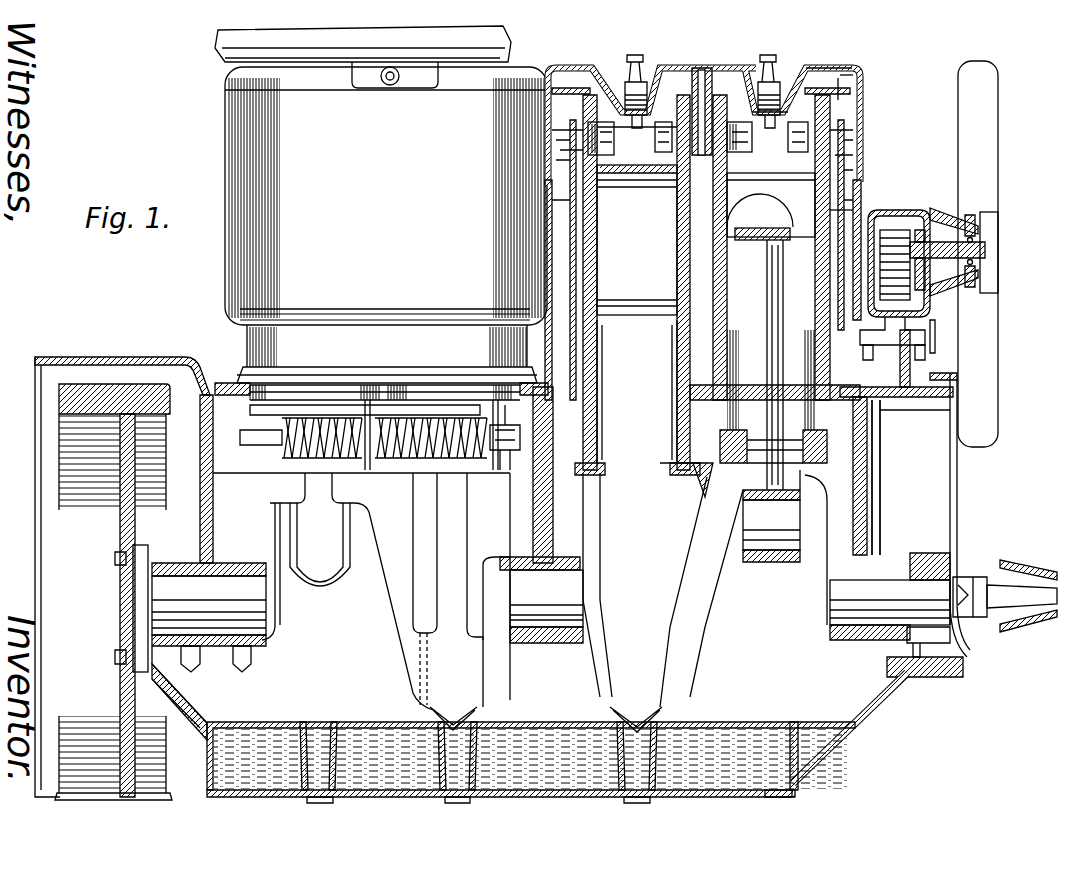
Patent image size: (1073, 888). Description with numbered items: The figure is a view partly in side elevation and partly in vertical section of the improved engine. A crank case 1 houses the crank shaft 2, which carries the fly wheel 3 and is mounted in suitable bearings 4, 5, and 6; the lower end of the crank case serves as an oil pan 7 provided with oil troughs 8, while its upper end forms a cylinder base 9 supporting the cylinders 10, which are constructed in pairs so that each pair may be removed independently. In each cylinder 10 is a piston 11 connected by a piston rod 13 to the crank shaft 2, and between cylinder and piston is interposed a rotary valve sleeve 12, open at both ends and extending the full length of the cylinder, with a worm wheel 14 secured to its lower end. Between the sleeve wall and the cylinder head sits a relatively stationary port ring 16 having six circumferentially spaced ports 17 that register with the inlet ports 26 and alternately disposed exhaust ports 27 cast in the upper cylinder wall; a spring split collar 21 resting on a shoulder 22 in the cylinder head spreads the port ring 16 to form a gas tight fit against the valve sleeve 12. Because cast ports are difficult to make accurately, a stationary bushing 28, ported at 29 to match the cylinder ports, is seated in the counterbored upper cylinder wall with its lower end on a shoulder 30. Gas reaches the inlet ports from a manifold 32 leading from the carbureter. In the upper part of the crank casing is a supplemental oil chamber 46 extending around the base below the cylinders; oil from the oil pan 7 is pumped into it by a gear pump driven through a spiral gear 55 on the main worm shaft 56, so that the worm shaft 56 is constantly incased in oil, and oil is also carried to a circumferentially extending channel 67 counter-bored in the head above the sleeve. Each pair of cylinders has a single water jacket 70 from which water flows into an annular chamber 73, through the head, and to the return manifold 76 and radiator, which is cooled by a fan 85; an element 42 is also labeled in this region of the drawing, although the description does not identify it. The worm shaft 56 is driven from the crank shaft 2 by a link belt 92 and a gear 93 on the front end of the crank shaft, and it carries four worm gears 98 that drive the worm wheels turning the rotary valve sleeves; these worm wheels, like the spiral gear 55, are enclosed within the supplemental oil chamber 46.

The crank case 1 is at (903, 680).
The crank shaft 2 is at (707, 600).
The fly wheel 3 is at (72, 488).
The bearing 4 is at (266, 640).
The bearing 5 is at (550, 643).
The bearing 6 is at (835, 640).
The oil pan 7 is at (835, 740).
The oil trough 8 is at (330, 740).
The cylinder base 9 is at (889, 477).
The cylinder 10 is at (228, 138).
The piston 11 is at (703, 271).
The rotary valve sleeve 12 is at (888, 162).
The piston rod 13 is at (640, 484).
The worm wheel 14 is at (870, 430).
The port ring 16 is at (860, 86).
The ports 17 is at (888, 133).
The spring split collar 21 is at (702, 154).
The shoulder 22 is at (575, 163).
The inlet ports 26 is at (770, 126).
The exhaust ports 27 is at (702, 150).
The stationary bushing 28 is at (600, 143).
The bushing ports 29 is at (583, 150).
The shoulder 30 is at (560, 205).
The manifold 32 is at (855, 112).
The water passage 42 is at (855, 212).
The supplemental oil chamber 46 is at (221, 398).
The spiral gear 55 is at (370, 462).
The main worm shaft 56 is at (510, 462).
The channel 67 is at (672, 72).
The water jacket 70 is at (860, 328).
The annular chamber 73 is at (855, 100).
The return manifold 76 is at (363, 46).
The fan 85 is at (966, 180).
The link belt 92 is at (897, 653).
The gear 93 is at (925, 556).
The worm gears 98 is at (432, 462).